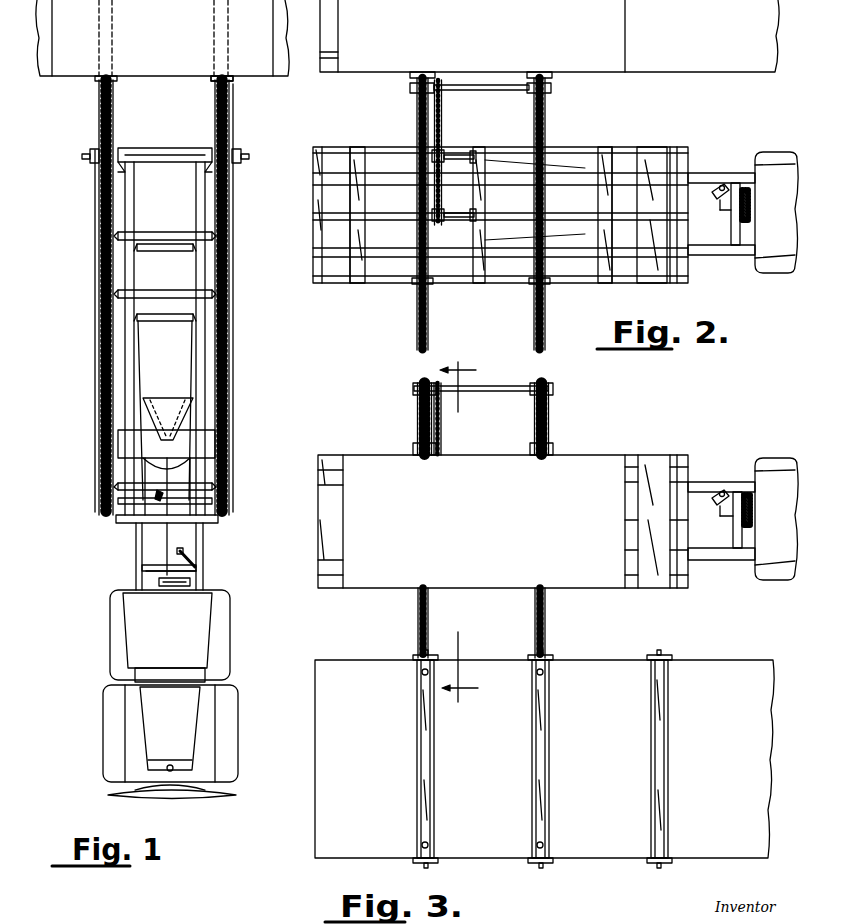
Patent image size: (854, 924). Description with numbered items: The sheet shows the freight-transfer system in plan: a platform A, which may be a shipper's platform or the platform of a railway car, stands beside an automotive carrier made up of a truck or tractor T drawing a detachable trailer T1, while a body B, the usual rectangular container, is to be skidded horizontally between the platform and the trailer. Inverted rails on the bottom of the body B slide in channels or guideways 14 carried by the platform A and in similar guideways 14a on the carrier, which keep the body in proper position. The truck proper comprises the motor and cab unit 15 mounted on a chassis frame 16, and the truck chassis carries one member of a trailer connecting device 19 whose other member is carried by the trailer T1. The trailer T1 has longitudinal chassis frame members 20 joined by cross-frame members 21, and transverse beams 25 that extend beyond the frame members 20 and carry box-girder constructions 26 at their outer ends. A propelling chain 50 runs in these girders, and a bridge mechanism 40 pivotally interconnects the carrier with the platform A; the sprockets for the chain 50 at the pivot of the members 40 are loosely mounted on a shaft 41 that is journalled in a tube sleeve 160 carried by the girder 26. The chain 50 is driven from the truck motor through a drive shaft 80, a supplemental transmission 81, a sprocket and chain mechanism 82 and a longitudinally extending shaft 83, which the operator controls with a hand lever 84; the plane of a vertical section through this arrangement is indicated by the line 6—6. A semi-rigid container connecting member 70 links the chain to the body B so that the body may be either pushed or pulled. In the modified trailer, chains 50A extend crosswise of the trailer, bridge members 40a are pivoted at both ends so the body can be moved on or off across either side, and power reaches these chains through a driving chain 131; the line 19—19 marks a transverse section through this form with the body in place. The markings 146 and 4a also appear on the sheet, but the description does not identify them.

In FIG. 1, the guideways 14 is at (113, 122).
In FIG. 3, the guideways 14 is at (668, 718).
In FIG. 2, the guideways 14a is at (586, 215).
In FIG. 1, the column rod 146 is at (230, 138).
In FIG. 1, the tube sleeve 160 is at (161, 156).
In FIG. 1, the bridge mechanism 40 is at (230, 93).
In FIG. 2, the bridge members 40a is at (418, 130).
In FIG. 3, the bridge members 40a is at (418, 614).
In FIG. 1, the shaft 41 is at (249, 157).
In FIG. 1, the box-girder constructions 26 is at (233, 106).
In FIG. 1, the propelling chain 50 is at (232, 271).
In FIG. 2, the chains 50A is at (560, 304).
In FIG. 3, the chains 50A is at (430, 618).
In FIG. 1, the section line 6 is at (242, 120).
In FIG. 1, the beams 25 is at (176, 232).
In FIG. 1, the longitudinal chassis frame members 20 is at (200, 355).
In FIG. 1, the cross-frame members 21 is at (167, 326).
In FIG. 1, the chassis frame 16 is at (203, 545).
In FIG. 1, the shaft 83 is at (165, 530).
In FIG. 1, the supplemental transmission 81 is at (175, 560).
In FIG. 1, the hand lever 84 is at (197, 558).
In FIG. 1, the sprocket and chain mechanism 82 is at (160, 581).
In FIG. 1, the drive shaft 80 is at (196, 577).
In FIG. 1, the motor and cab unit 15 is at (185, 712).
In FIG. 2, the beam post 4a is at (366, 215).
In FIG. 2, the container connecting member 70 is at (454, 152).
In FIG. 3, the container connecting member 70 is at (417, 421).
In FIG. 3, the driving chain 131 is at (443, 421).
In FIG. 3, the trailer connecting device 19 is at (459, 533).
In FIG. 1, the truck T is at (203, 632).
In FIG. 2, the truck T is at (775, 268).
In FIG. 3, the truck T is at (775, 572).
In FIG. 1, the trailer T1 is at (266, 325).
In FIG. 2, the trailer T1 is at (338, 286).
In FIG. 3, the trailer T1 is at (646, 589).
In FIG. 1, the platform A is at (282, 22).
In FIG. 2, the platform A is at (654, 36).
In FIG. 3, the platform A is at (544, 759).
In FIG. 1, the body B is at (162, 38).
In FIG. 2, the body B is at (549, 36).
In FIG. 3, the body B is at (503, 521).